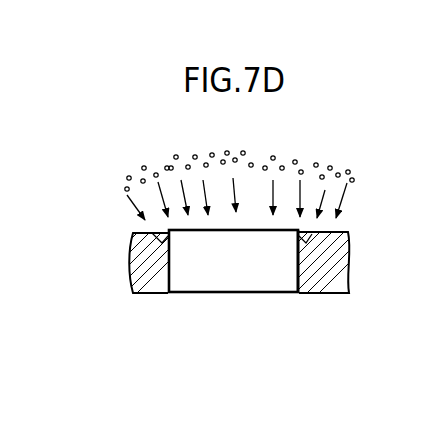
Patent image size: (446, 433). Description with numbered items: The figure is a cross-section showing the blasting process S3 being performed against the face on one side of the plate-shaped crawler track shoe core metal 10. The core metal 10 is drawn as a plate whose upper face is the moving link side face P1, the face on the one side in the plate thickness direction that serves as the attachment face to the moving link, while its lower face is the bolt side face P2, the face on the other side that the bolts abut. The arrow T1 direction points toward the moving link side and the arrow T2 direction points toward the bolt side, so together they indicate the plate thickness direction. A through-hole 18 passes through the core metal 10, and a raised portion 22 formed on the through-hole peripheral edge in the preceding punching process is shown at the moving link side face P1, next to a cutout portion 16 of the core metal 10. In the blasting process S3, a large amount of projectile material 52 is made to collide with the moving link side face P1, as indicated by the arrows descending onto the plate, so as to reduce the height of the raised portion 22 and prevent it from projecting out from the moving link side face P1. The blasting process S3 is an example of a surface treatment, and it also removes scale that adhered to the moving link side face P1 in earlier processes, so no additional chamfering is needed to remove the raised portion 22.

The crawler track shoe core metal 10 is at (241, 253).
The cutout portion 16 is at (301, 232).
The through-hole 18 is at (296, 278).
The raised portion 22 is at (250, 230).
The projectile material 52 is at (332, 166).
The blasting process S3 is at (204, 135).
The moving link side face P1 is at (137, 236).
The bolt side face P2 is at (150, 294).
The arrow T1 direction T1 is at (93, 297).
The arrow T2 direction T2 is at (92, 319).